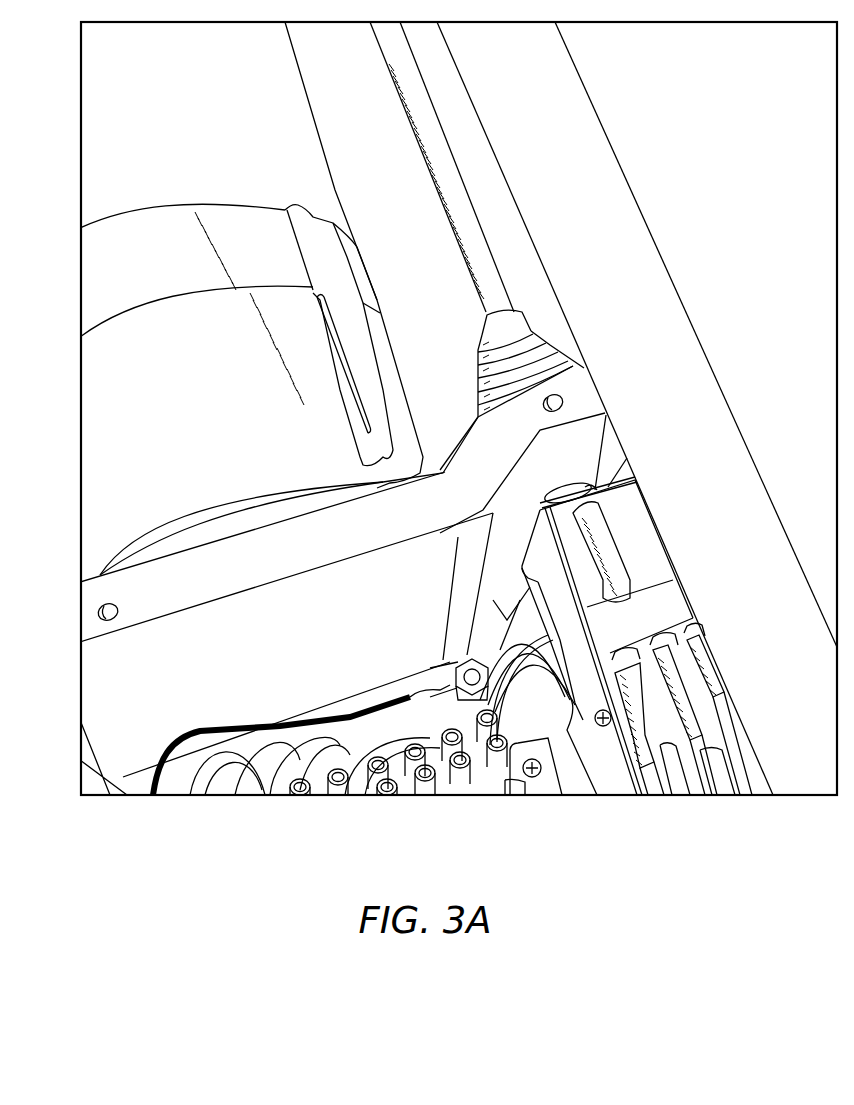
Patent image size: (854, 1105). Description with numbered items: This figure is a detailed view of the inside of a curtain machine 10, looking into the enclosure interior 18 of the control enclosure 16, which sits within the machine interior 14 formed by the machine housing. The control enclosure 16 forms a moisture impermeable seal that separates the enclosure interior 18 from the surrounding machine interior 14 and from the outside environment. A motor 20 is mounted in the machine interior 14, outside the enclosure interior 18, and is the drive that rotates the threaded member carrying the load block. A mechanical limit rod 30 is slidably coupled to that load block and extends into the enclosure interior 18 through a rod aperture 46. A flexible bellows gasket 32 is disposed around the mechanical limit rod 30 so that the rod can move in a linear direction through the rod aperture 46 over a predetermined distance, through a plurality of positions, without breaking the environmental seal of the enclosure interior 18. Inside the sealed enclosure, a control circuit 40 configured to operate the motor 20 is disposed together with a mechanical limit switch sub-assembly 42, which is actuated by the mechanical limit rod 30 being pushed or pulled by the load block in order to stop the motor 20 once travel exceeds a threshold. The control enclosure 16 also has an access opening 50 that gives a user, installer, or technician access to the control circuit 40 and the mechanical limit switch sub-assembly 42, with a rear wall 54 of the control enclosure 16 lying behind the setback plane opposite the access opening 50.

The curtain machine 10 is at (706, 266).
The machine interior 14 is at (401, 270).
The control enclosure 16 is at (585, 397).
The enclosure interior 18 is at (176, 684).
The motor 20 is at (110, 430).
The mechanical limit rod 30 is at (450, 175).
The flexible bellows gasket 32 is at (553, 342).
The control circuit 40 is at (548, 790).
The mechanical limit switch sub-assembly 42 is at (673, 605).
The rod aperture 46 is at (592, 482).
The access opening 50 is at (588, 440).
The rear wall 54 is at (340, 700).